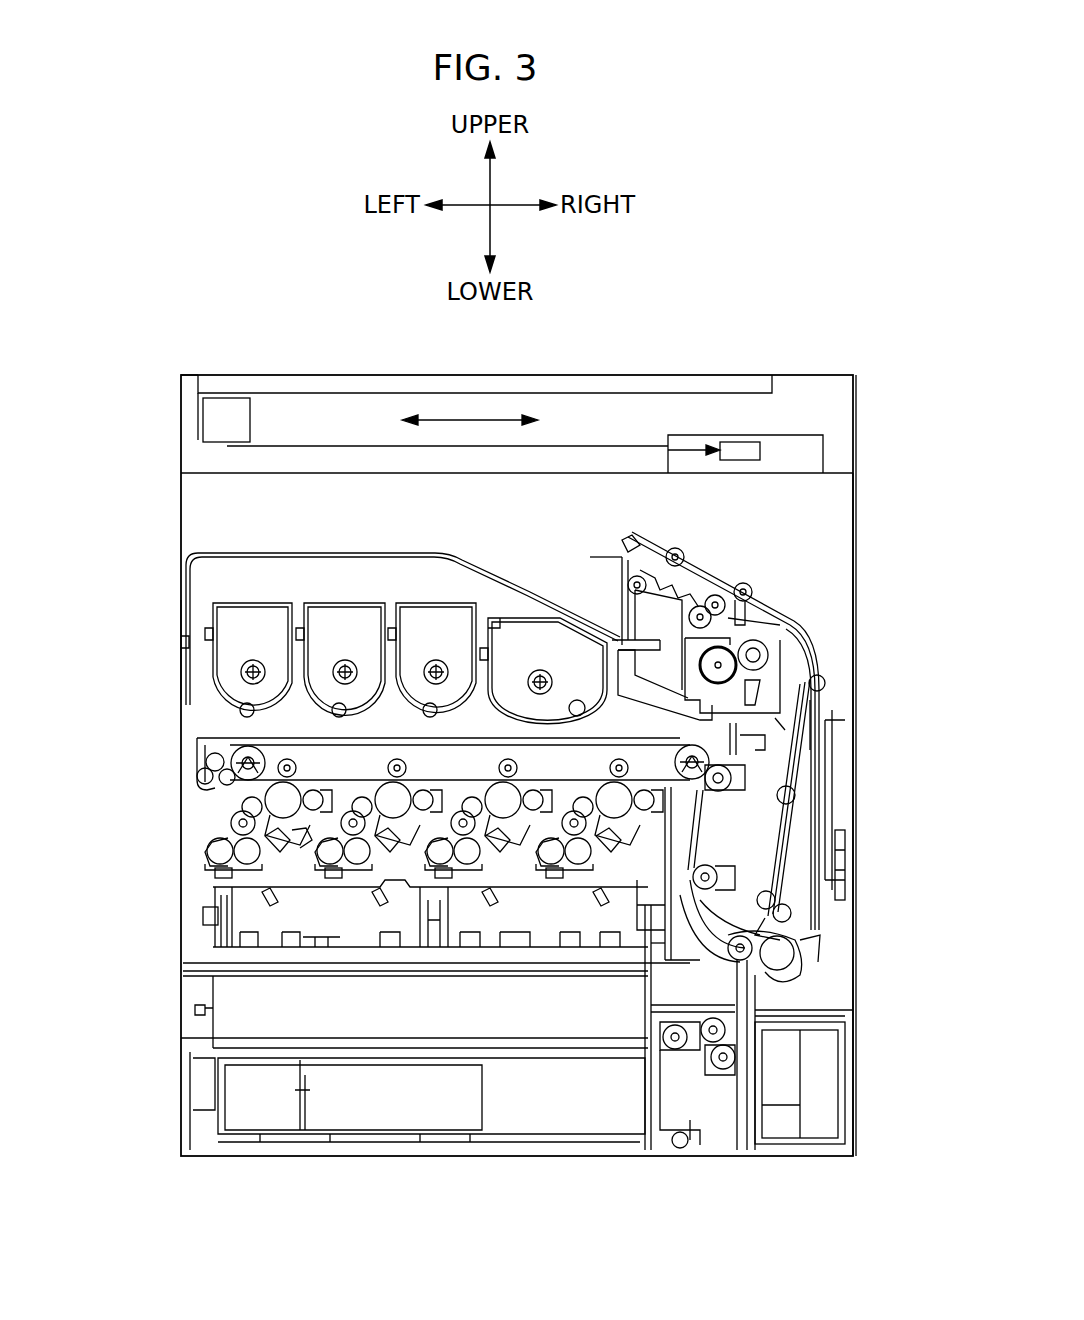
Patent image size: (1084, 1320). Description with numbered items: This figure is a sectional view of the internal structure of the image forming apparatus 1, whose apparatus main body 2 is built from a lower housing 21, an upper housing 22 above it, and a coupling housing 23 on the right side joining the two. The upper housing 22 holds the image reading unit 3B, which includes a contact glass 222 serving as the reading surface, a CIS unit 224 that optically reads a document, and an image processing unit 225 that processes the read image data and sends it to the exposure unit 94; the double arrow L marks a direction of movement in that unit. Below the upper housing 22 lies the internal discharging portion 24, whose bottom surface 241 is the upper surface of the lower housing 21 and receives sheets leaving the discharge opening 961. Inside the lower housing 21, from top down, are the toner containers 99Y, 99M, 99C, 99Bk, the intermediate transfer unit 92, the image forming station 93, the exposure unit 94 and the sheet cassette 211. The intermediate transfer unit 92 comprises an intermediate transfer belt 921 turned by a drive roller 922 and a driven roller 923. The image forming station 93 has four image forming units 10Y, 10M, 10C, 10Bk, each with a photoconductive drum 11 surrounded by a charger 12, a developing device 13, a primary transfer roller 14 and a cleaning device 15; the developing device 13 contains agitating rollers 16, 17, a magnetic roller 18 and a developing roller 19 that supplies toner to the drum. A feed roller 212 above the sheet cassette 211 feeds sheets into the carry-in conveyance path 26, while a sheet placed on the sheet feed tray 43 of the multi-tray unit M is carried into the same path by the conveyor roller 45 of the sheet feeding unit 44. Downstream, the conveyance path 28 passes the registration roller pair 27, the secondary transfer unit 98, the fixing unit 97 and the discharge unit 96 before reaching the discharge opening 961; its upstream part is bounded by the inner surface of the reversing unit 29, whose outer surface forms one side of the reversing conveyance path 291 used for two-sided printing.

The image forming apparatus 1 is at (773, 364).
The image reading unit 3B is at (170, 395).
The apparatus main body 2 is at (178, 636).
The upper housing 22 is at (853, 442).
The contact glass 222 is at (210, 378).
The CIS unit 224 is at (215, 430).
The image processing unit 225 is at (740, 432).
The moving direction L is at (482, 422).
The coupling housing 23 is at (853, 554).
The internal discharging portion 24 is at (366, 593).
The bottom surface 241 is at (322, 556).
The toner container 99Y is at (246, 603).
The toner container 99M is at (340, 603).
The toner container 99C is at (408, 603).
The toner container 99Bk is at (506, 612).
The intermediate transfer unit 92 is at (436, 738).
The intermediate transfer belt 921 is at (386, 752).
The drive roller 922 is at (702, 785).
The driven roller 923 is at (206, 773).
The photoconductive drum 11 is at (280, 762).
The primary transfer roller 14 is at (263, 752).
The cleaning device 15 is at (316, 782).
The image forming unit 10Y is at (214, 851).
The image forming unit 10M is at (365, 787).
The image forming unit 10C is at (473, 787).
The image forming unit 10Bk is at (588, 787).
The developing roller 19 is at (232, 818).
The magnetic roller 18 is at (230, 836).
The agitating roller 17 is at (210, 856).
The agitating roller 16 is at (248, 866).
The developing device 13 is at (272, 840).
The charger 12 is at (305, 860).
The image forming station 93 is at (180, 906).
The exposure unit 94 is at (203, 916).
The lower housing 21 is at (377, 1058).
The sheet cassette 211 is at (215, 1125).
The feed roller 212 is at (675, 1050).
The registration roller pair 27 is at (682, 872).
The carry-in conveyance path 26 is at (765, 1004).
The sheet feeding unit 44 is at (840, 990).
The conveyor roller 45 is at (792, 957).
The discharge unit 96 is at (718, 596).
The discharge opening 961 is at (640, 547).
The fixing unit 97 is at (772, 632).
The secondary transfer unit 98 is at (812, 703).
The conveyance path 28 is at (782, 905).
The reversing unit 29 is at (745, 760).
The reversing conveyance path 291 is at (790, 770).
The sheet feed tray 43 is at (835, 790).
The multi-tray unit M is at (858, 846).